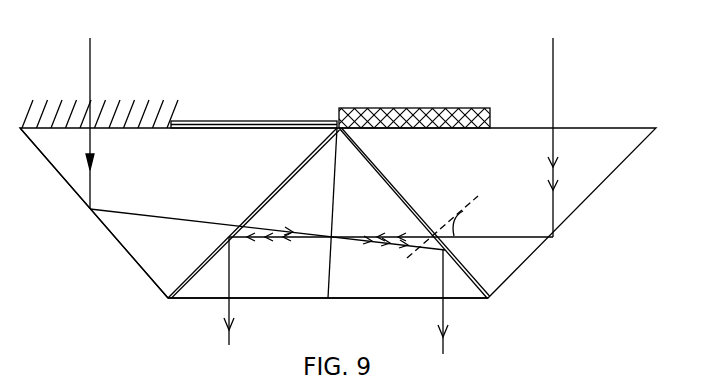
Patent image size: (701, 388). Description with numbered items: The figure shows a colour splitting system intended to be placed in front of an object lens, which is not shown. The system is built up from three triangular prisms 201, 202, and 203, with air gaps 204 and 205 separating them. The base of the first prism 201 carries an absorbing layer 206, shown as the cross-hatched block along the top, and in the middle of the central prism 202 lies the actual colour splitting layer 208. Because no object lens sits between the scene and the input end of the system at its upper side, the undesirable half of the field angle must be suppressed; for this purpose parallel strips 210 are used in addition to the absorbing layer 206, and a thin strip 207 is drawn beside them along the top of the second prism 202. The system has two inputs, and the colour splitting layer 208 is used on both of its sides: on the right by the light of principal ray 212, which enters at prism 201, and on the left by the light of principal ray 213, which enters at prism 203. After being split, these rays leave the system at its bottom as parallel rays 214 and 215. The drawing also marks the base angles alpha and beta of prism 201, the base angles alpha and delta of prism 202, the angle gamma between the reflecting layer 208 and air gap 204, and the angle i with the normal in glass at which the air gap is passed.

The triangular prism 201 is at (535, 248).
The triangular prism 202 is at (296, 292).
The triangular prism 203 is at (122, 234).
The air gap 204 is at (400, 196).
The air gap 205 is at (268, 189).
The absorbing layer 206 is at (390, 108).
The reflecting layer 207 is at (279, 120).
The colour splitting layer 208 is at (330, 252).
The parallel strips 210 is at (172, 108).
The principal ray 212 is at (553, 80).
The principal ray 213 is at (92, 80).
The parallel ray 214 is at (443, 348).
The parallel ray 215 is at (229, 336).